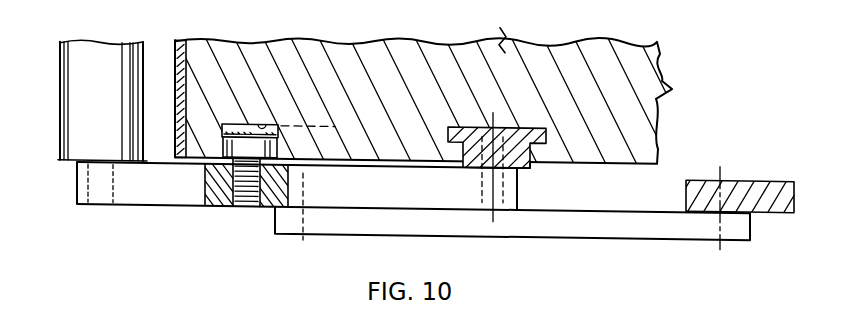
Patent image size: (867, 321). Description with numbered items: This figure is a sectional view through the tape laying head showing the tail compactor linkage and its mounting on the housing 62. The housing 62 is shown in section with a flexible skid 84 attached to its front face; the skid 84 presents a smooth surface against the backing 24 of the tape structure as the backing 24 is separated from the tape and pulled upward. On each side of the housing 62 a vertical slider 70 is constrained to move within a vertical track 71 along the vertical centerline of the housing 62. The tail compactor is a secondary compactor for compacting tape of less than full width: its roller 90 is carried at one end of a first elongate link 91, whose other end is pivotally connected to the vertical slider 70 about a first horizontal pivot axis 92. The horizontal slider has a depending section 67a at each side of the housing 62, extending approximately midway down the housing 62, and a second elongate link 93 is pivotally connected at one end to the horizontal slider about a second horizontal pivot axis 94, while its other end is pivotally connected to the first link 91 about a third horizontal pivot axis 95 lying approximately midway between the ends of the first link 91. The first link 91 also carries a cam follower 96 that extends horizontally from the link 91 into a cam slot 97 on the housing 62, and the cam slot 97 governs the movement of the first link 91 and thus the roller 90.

The backing 24 is at (176, 40).
The skid 84 is at (185, 48).
The housing 62 is at (604, 155).
The roller 90 is at (60, 139).
The first elongate link 91 is at (133, 202).
The second elongate link 93 is at (574, 232).
The third horizontal pivot axis 95 is at (306, 224).
The cam follower 96 is at (276, 143).
The cam slot 97 is at (254, 123).
The vertical track 71 is at (526, 99).
The vertical slider 70 is at (524, 161).
The first horizontal pivot axis 92 is at (492, 185).
The depending section 67a is at (767, 202).
The second horizontal pivot axis 94 is at (720, 240).